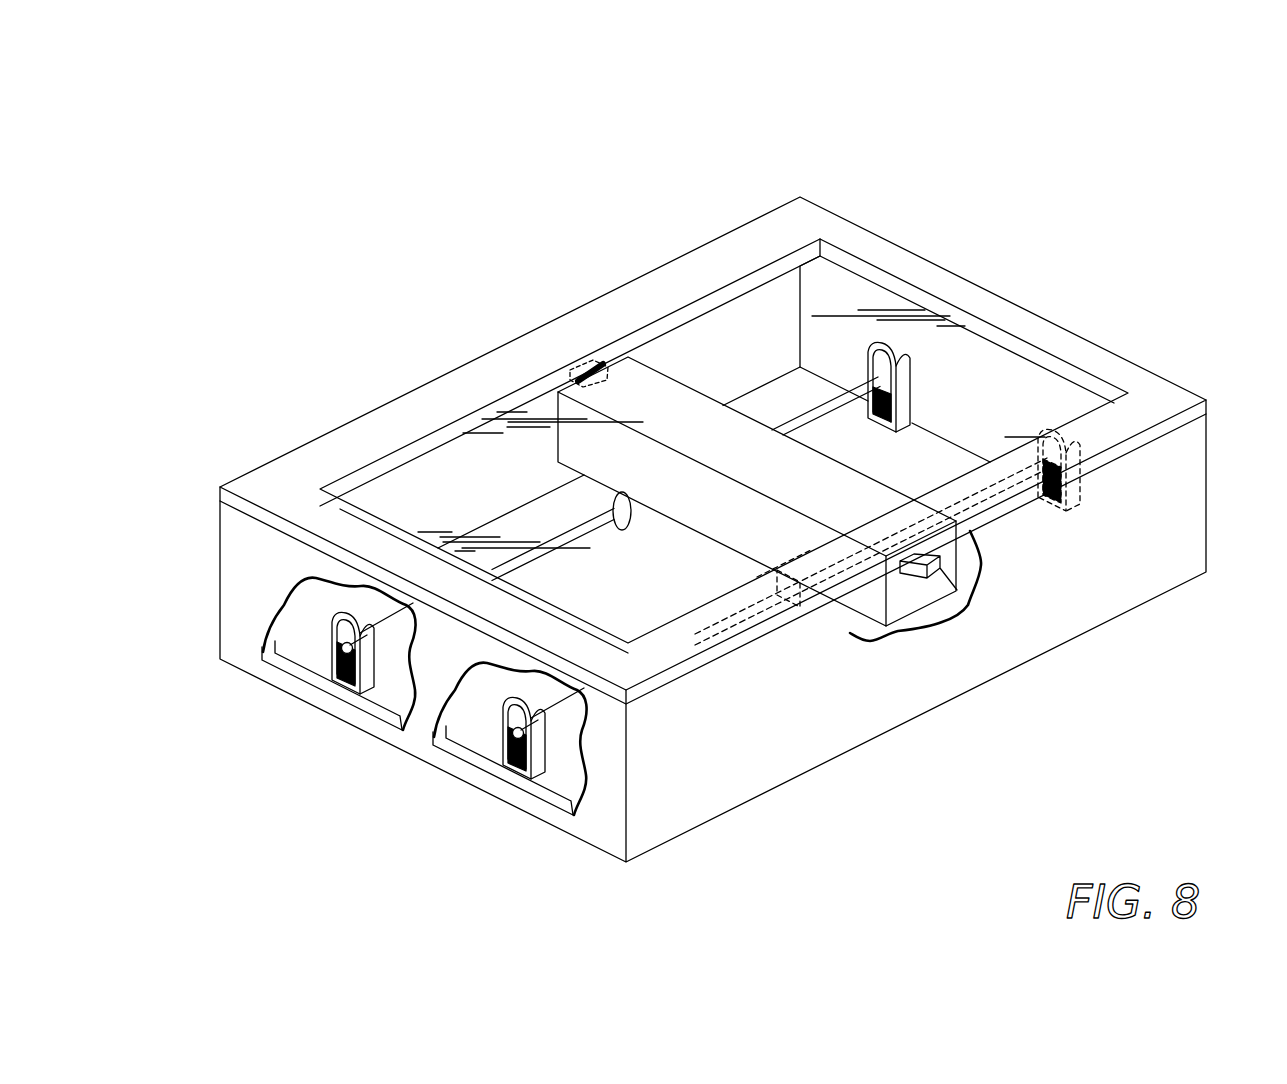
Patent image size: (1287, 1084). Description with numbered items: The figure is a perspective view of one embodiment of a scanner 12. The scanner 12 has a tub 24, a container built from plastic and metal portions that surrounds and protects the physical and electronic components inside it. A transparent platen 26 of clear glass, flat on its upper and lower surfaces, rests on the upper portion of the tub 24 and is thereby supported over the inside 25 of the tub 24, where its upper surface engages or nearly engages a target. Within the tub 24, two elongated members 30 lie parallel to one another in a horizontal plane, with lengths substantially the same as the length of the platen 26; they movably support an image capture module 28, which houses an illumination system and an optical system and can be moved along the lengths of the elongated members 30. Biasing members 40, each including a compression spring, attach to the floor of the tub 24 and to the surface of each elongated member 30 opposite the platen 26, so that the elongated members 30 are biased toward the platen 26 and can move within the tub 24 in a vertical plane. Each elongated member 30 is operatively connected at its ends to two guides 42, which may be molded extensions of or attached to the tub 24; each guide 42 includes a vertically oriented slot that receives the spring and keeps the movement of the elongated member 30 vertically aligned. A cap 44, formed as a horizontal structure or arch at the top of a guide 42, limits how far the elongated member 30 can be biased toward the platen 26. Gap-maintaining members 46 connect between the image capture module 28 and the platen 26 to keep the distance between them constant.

The scanner 12 is at (1098, 188).
The tub 24 is at (871, 243).
The inside 25 is at (747, 324).
The transparent platen 26 is at (427, 477).
The image capture module 28 is at (640, 383).
The elongated member 30 is at (842, 404).
The biasing member 40 is at (912, 398).
The guide 42 is at (389, 683).
The cap 44 is at (283, 608).
The gap-maintaining member 46 is at (580, 370).